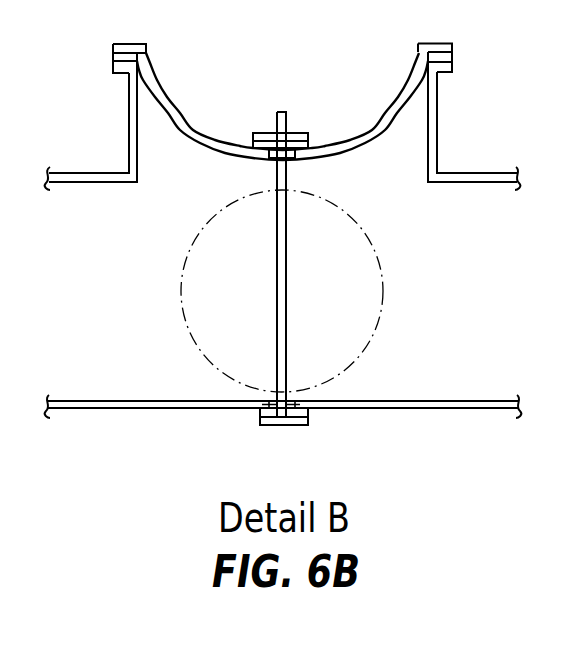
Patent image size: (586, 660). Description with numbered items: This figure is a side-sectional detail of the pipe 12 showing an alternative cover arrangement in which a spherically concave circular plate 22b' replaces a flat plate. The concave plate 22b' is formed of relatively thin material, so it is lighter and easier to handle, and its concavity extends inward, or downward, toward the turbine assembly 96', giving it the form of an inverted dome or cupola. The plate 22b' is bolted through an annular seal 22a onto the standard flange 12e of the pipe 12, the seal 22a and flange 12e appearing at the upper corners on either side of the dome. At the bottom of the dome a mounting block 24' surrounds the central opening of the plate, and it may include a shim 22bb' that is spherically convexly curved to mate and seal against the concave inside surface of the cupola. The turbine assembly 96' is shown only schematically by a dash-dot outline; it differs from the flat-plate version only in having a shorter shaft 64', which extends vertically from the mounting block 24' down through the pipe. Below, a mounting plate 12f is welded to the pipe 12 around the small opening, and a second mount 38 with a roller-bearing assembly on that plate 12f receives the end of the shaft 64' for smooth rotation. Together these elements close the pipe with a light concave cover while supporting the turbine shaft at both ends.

The pipe 12 is at (473, 172).
The flange 12e is at (443, 73).
The mounting plate 12f is at (260, 412).
The annular seal 22a is at (447, 53).
The spherically concave circular plate 22b' is at (282, 100).
The shim 22bb' is at (306, 126).
The mounting block 24' is at (282, 110).
The second mount 38 is at (317, 422).
The shorter shaft 64' is at (233, 264).
The turbine assembly 96' is at (320, 291).